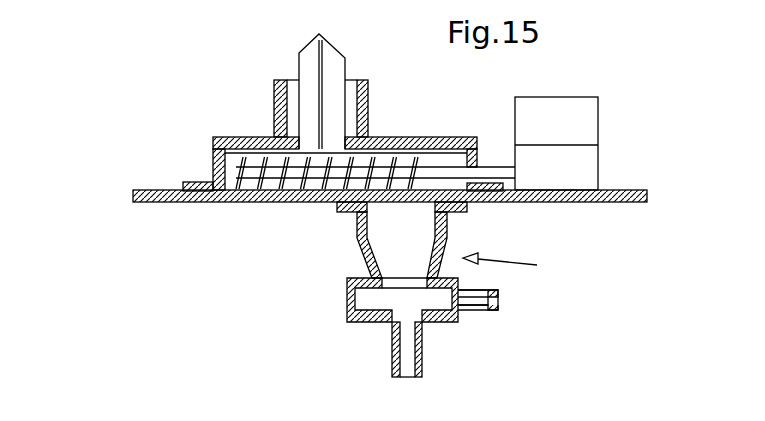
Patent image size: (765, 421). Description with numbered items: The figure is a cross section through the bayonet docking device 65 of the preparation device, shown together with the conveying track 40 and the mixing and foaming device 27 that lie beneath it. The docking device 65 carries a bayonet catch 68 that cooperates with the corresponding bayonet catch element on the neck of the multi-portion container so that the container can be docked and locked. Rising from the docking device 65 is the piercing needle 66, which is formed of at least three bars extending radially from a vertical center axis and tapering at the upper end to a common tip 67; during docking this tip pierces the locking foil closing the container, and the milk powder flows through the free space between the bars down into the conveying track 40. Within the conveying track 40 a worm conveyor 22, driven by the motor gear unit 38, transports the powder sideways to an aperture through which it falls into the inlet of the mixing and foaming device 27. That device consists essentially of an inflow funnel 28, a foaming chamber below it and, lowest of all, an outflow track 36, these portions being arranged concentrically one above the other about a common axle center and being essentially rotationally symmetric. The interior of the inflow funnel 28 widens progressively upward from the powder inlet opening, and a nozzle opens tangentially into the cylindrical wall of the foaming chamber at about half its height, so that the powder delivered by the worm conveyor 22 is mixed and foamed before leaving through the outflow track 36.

The worm conveyor 22 is at (308, 203).
The mixing and foaming device 27 is at (520, 264).
The inflow funnel 28 is at (387, 227).
The outflow track 36 is at (412, 355).
The motor gear unit 38 is at (577, 168).
The conveying track 40 is at (437, 157).
The docking device 65 is at (178, 202).
The piercing needle 66 is at (310, 62).
The common tip 67 is at (318, 38).
The bayonet catch 68 is at (277, 105).